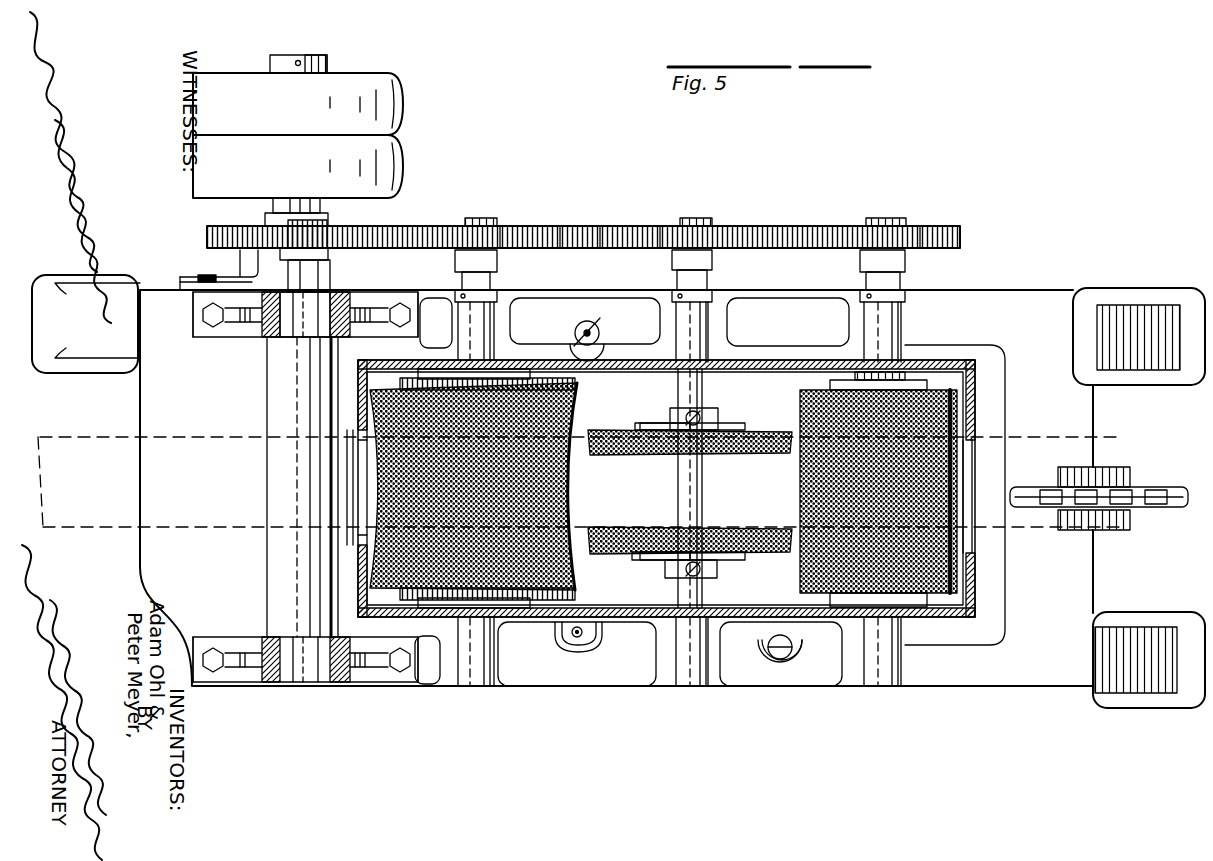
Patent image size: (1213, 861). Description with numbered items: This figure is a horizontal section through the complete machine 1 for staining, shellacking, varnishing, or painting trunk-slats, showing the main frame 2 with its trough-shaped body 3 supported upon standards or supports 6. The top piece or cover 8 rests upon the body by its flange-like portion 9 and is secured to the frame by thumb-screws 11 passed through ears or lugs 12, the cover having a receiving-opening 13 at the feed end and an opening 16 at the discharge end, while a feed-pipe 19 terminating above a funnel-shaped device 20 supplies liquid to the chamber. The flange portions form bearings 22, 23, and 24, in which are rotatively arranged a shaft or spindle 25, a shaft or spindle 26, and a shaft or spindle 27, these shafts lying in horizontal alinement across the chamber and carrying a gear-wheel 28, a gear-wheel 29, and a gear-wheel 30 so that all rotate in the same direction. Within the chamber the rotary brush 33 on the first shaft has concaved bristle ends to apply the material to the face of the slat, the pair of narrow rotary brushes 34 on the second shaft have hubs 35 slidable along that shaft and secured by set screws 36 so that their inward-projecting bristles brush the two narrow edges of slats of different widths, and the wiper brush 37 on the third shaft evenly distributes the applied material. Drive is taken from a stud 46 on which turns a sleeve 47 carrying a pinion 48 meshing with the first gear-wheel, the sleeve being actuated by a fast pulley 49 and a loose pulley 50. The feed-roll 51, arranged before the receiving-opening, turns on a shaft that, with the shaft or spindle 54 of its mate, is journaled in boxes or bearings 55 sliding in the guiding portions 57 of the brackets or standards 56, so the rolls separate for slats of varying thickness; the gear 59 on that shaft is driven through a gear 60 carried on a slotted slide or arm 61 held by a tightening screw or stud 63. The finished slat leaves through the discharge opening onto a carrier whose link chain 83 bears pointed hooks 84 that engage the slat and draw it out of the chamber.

The complete machine 1 is at (642, 706).
The main frame 2 is at (1016, 308).
The trough-shaped body 3 is at (691, 497).
The standards or supports 6 is at (1146, 603).
The top piece or cover 8 is at (330, 396).
The flange-like portion of the cover 9 is at (426, 346).
The thumb-screws 11 is at (570, 336).
The ears or lugs 12 is at (595, 333).
The receiving-opening 13 is at (346, 474).
The opening in the cover 16 is at (968, 500).
The feed-pipe 19 is at (570, 642).
The funnel-shaped device 20 is at (585, 650).
The bearings 22 is at (500, 300).
The bearings 23 is at (705, 310).
The bearings 24 is at (905, 305).
The shaft or spindle 25 is at (485, 222).
The shaft or spindle 26 is at (702, 222).
The shaft or spindle 27 is at (883, 225).
The gear-wheel 28 is at (520, 235).
The gear-wheel 29 is at (650, 235).
The gear-wheel 30 is at (942, 238).
The rotary brush 33 is at (555, 487).
The narrow rotary brushes 34 is at (748, 453).
The hubs 35 is at (672, 416).
The set screws 36 is at (702, 414).
The wiper brush 37 is at (802, 493).
The stud 46 is at (308, 55).
The sleeve 47 is at (288, 73).
The pinion 48 is at (210, 232).
The fast pulley 49 is at (395, 160).
The loose pulley 50 is at (372, 82).
The feed-roll 51 is at (268, 400).
The shaft or spindle 54 is at (300, 265).
The boxes or bearings 55 is at (305, 338).
The brackets or standards 56 is at (215, 338).
The guiding portions 57 is at (272, 338).
The gear 59 is at (336, 258).
The gear 60 is at (240, 232).
The slide or arm 61 is at (178, 283).
The tightening screw or stud 63 is at (212, 272).
The link chain 83 is at (1155, 508).
The pointed hooks 84 is at (1135, 485).